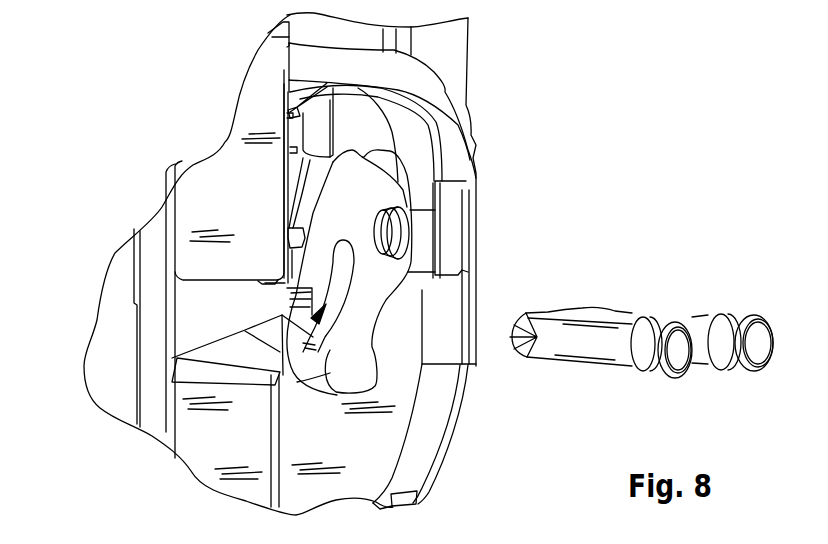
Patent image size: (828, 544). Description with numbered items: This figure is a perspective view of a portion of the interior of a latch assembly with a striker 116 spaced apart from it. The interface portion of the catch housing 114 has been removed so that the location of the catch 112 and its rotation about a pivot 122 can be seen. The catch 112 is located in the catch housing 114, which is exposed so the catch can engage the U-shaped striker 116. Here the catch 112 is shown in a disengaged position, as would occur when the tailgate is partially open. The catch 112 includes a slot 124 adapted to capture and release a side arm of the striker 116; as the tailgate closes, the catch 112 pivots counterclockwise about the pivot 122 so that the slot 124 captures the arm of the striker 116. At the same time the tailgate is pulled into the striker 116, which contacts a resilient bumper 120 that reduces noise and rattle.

The catch 112 is at (376, 292).
The catch housing 114 is at (280, 264).
The striker 116 is at (632, 320).
The bumper 120 is at (288, 291).
The pivot 122 is at (397, 233).
The slot 124 is at (323, 310).